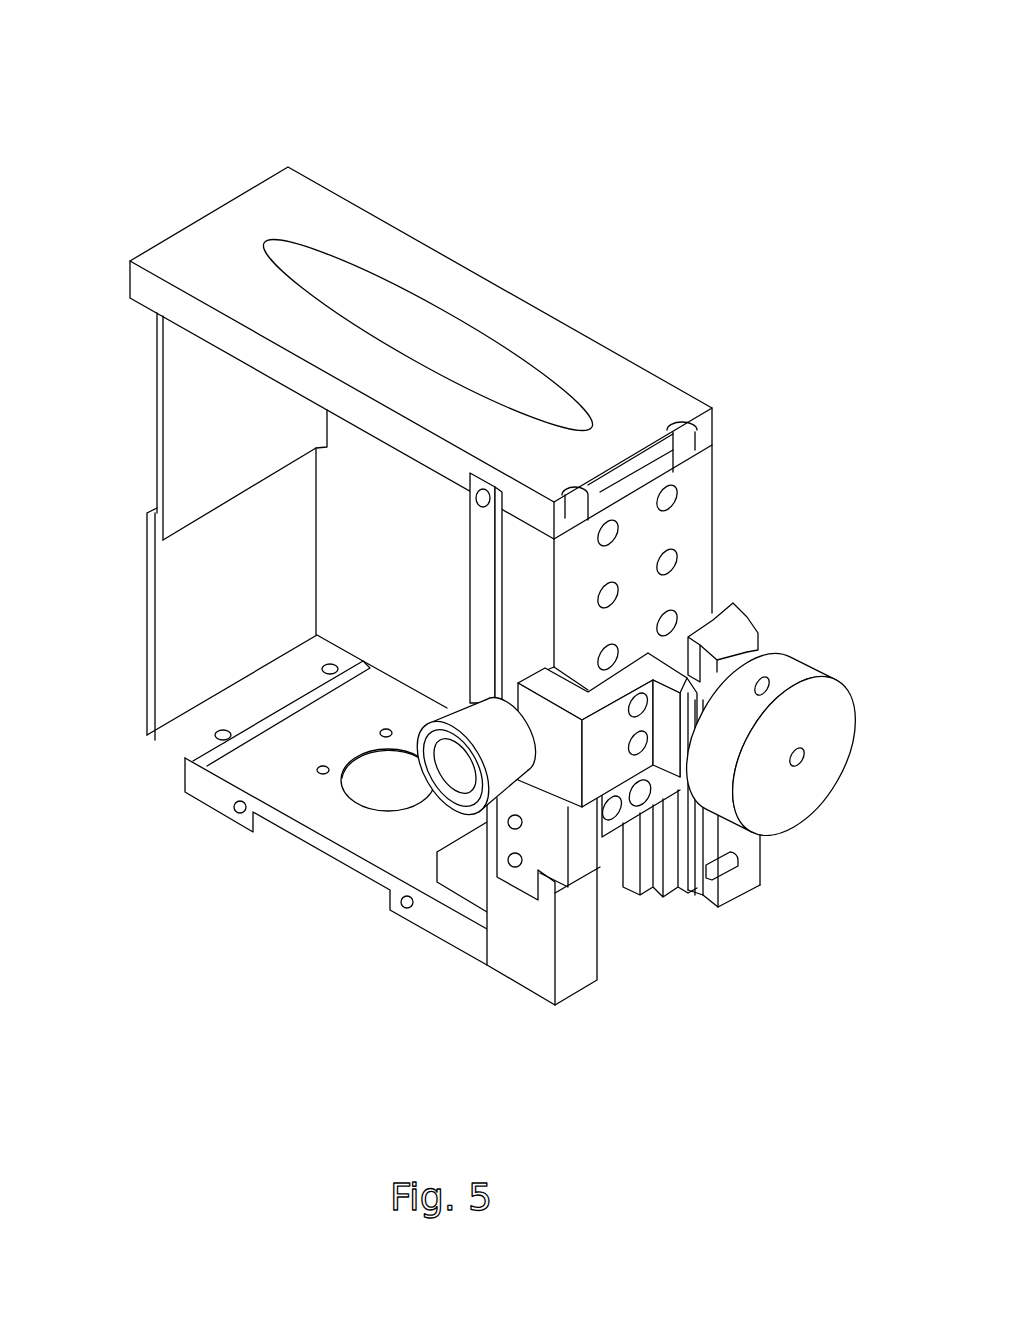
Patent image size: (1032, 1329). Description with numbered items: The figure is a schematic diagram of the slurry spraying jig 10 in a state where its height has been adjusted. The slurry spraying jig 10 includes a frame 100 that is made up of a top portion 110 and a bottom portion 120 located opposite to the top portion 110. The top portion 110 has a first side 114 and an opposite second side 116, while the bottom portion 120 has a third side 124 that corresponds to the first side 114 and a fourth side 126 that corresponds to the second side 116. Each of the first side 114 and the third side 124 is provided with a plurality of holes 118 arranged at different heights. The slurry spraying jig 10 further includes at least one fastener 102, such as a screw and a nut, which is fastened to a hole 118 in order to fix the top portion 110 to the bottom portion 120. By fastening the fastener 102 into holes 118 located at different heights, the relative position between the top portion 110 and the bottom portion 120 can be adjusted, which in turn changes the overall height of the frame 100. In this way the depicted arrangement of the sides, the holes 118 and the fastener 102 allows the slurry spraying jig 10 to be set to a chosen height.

The slurry spraying jig 10 is at (50, 25).
The frame 100 is at (832, 108).
The top portion 110 is at (182, 242).
The bottom portion 120 is at (192, 777).
The first side 114 is at (707, 487).
The second side 116 is at (189, 400).
The holes 118 is at (699, 560).
The fourth side 126 is at (186, 584).
The third side 124 is at (607, 878).
The fastener 102 is at (830, 695).